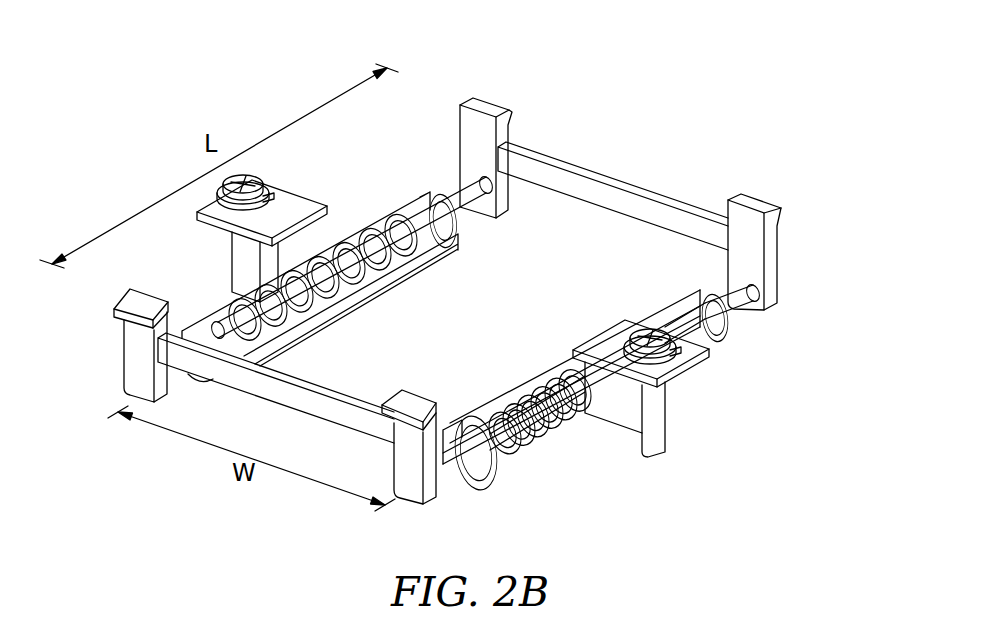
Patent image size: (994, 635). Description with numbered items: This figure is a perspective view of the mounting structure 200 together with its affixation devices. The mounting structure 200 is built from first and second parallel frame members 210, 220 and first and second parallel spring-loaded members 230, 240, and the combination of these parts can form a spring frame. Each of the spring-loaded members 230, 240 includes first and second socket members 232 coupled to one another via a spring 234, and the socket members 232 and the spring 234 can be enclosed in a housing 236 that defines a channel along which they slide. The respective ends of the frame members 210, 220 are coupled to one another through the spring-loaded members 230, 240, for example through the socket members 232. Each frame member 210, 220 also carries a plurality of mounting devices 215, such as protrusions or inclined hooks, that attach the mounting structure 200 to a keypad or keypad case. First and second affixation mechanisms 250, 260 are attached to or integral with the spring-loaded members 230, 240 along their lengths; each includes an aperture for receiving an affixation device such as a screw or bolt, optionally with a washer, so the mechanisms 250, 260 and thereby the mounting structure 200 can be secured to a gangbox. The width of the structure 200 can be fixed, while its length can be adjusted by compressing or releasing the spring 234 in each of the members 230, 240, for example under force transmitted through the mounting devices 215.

The mounting structure 200 is at (805, 97).
The first parallel frame member 210 is at (270, 400).
The mounting device 215 is at (146, 296).
The second parallel frame member 220 is at (613, 175).
The first parallel spring-loaded member 230 is at (344, 228).
The socket member 232 is at (233, 333).
The spring 234 is at (357, 282).
The housing 236 is at (312, 312).
The second parallel spring-loaded member 240 is at (573, 437).
The first affixation mechanism 250 is at (240, 177).
The second affixation mechanism 260 is at (605, 345).